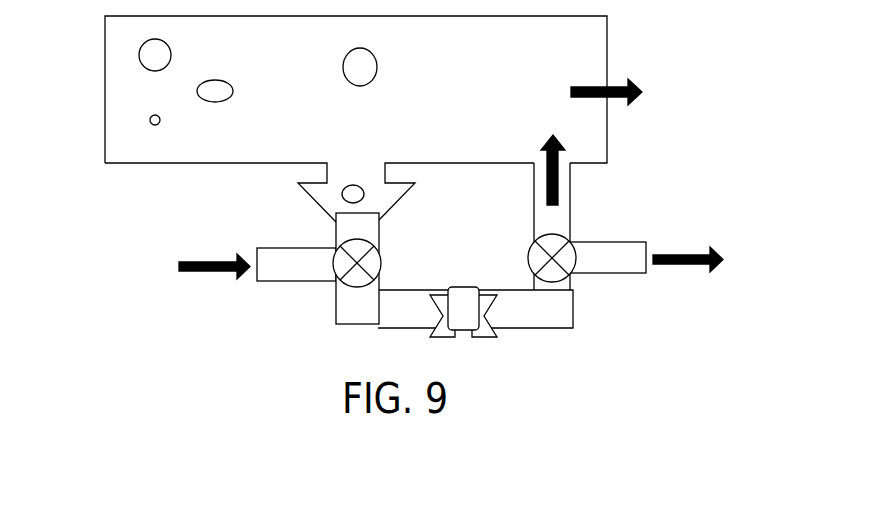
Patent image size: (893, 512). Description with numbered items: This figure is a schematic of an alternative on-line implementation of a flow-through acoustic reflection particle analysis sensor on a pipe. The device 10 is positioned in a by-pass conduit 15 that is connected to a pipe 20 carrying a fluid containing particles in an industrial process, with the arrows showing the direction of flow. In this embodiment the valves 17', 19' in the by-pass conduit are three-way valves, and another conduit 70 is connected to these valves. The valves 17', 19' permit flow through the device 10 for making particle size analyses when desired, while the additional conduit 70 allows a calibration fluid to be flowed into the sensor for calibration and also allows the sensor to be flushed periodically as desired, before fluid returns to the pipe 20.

The device 10 is at (462, 287).
The by-pass conduit 15 is at (570, 193).
The three-way valve 17' is at (342, 269).
The three-way valve 19' is at (574, 247).
The pipe 20 is at (630, 242).
The conduit 70 is at (263, 247).